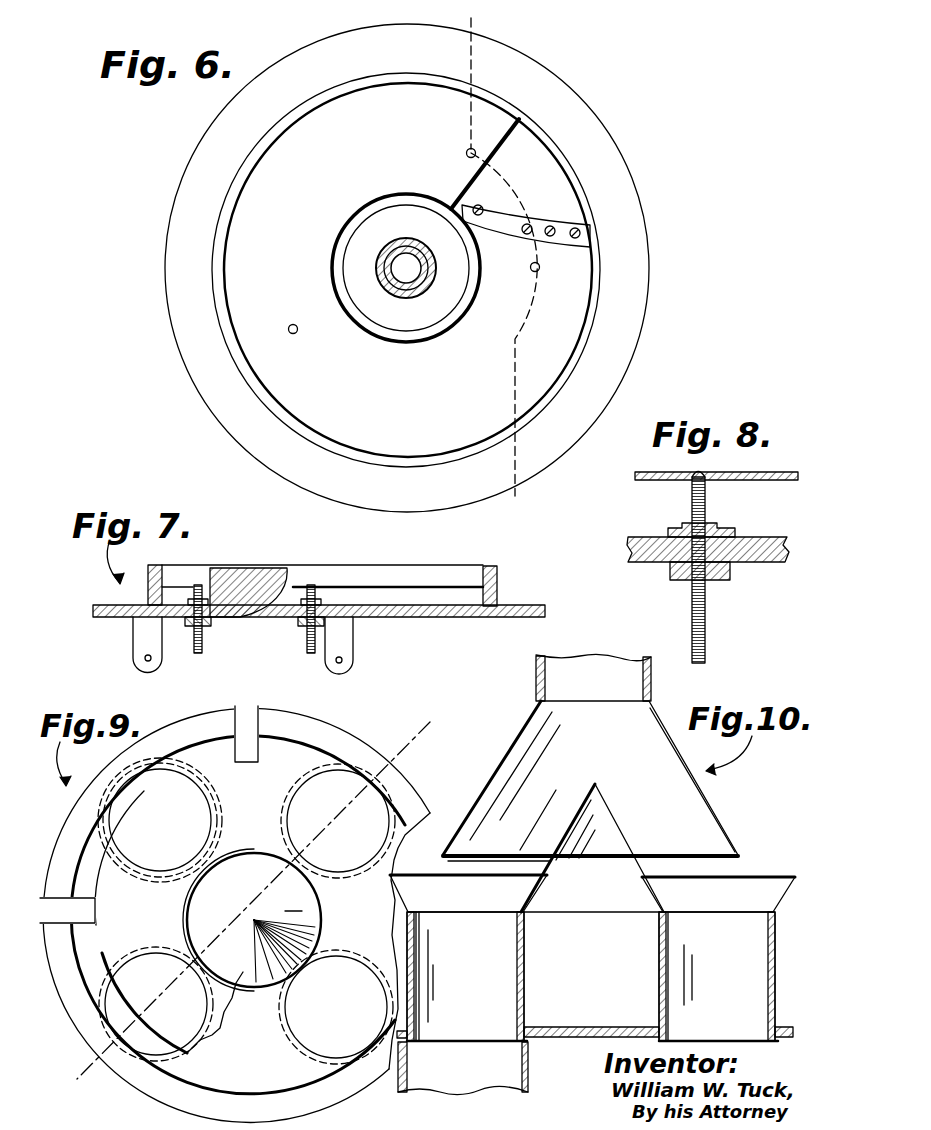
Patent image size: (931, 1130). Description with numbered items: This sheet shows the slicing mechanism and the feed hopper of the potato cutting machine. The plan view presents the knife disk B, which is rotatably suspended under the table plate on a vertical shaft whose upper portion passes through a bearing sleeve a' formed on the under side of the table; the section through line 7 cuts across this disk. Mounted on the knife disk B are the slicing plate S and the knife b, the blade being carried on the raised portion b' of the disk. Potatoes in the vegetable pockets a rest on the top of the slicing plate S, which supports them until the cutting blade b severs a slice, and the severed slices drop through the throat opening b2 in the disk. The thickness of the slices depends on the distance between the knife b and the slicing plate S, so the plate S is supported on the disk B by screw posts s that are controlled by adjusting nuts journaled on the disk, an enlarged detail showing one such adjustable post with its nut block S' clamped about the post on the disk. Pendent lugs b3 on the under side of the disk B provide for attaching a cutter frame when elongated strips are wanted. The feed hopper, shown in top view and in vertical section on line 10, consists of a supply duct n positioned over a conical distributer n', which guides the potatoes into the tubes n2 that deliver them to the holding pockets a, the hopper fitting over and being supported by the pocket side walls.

In FIG. 6, the knife disk B is at (286, 470).
In FIG. 7, the knife disk B is at (93, 616).
In FIG. 8, the knife disk B is at (783, 566).
In FIG. 6, the slicing plate S is at (406, 270).
In FIG. 7, the slicing plate S is at (322, 569).
In FIG. 8, the slicing plate S is at (710, 500).
In FIG. 8, the nut block S' is at (685, 569).
In FIG. 6, the screw posts s is at (466, 153).
In FIG. 7, the screw posts s is at (200, 653).
In FIG. 8, the screw posts s is at (708, 646).
In FIG. 6, the vegetable pockets a is at (399, 259).
In FIG. 10, the vegetable pockets a is at (463, 1068).
In FIG. 6, the bearing sleeve a' is at (403, 291).
In FIG. 6, the knife b is at (526, 226).
In FIG. 7, the knife b is at (293, 550).
In FIG. 6, the raised portion b' is at (543, 188).
In FIG. 7, the raised portion b' is at (248, 565).
In FIG. 7, the throat opening b2 is at (275, 602).
In FIG. 7, the pendent lugs b3 is at (372, 646).
In FIG. 9, the supply duct n is at (235, 914).
In FIG. 10, the supply duct n is at (590, 757).
In FIG. 9, the conical distributer n' is at (252, 920).
In FIG. 10, the conical distributer n' is at (592, 848).
In FIG. 9, the tubes n2 is at (336, 1007).
In FIG. 10, the tubes n2 is at (592, 958).
In FIG. 6, the line 7- 7 is at (496, 20).
In FIG. 9, the line 10- 10 is at (255, 906).